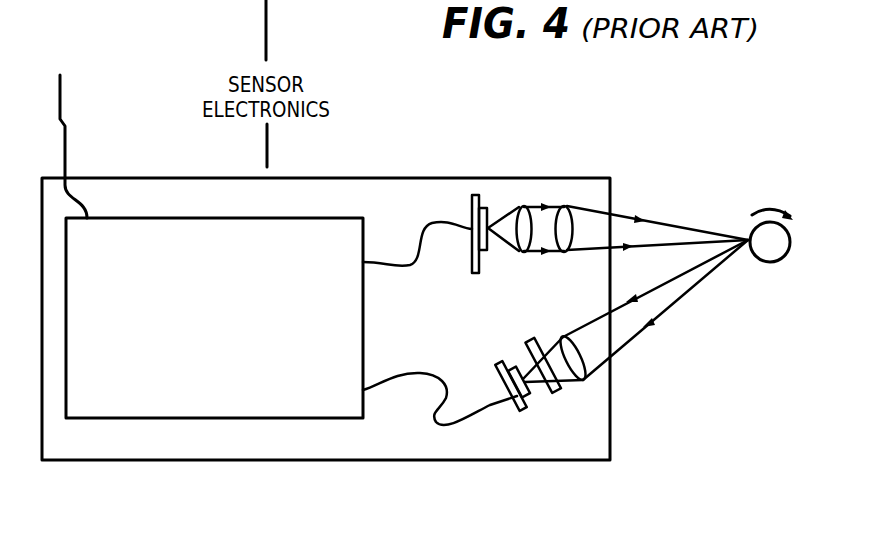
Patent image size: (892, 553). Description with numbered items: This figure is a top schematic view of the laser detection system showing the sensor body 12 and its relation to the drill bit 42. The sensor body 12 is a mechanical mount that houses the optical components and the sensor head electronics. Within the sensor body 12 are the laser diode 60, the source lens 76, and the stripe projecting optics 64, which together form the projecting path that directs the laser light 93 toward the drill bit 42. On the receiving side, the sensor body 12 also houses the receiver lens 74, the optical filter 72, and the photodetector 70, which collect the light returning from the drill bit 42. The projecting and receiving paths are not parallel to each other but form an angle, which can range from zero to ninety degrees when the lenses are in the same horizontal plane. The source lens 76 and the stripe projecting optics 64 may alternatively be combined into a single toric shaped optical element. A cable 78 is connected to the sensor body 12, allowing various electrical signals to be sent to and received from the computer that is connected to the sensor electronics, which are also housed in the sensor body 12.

The sensor body 12 is at (463, 461).
The drill bit 42 is at (776, 265).
The laser diode 60 is at (487, 205).
The stripe projecting optics 64 is at (573, 208).
The photodetector 70 is at (522, 412).
The optical filter 72 is at (570, 398).
The receiver lens 74 is at (587, 380).
The source lens 76 is at (523, 205).
The cable 78 is at (67, 122).
The light beam 93 is at (664, 222).